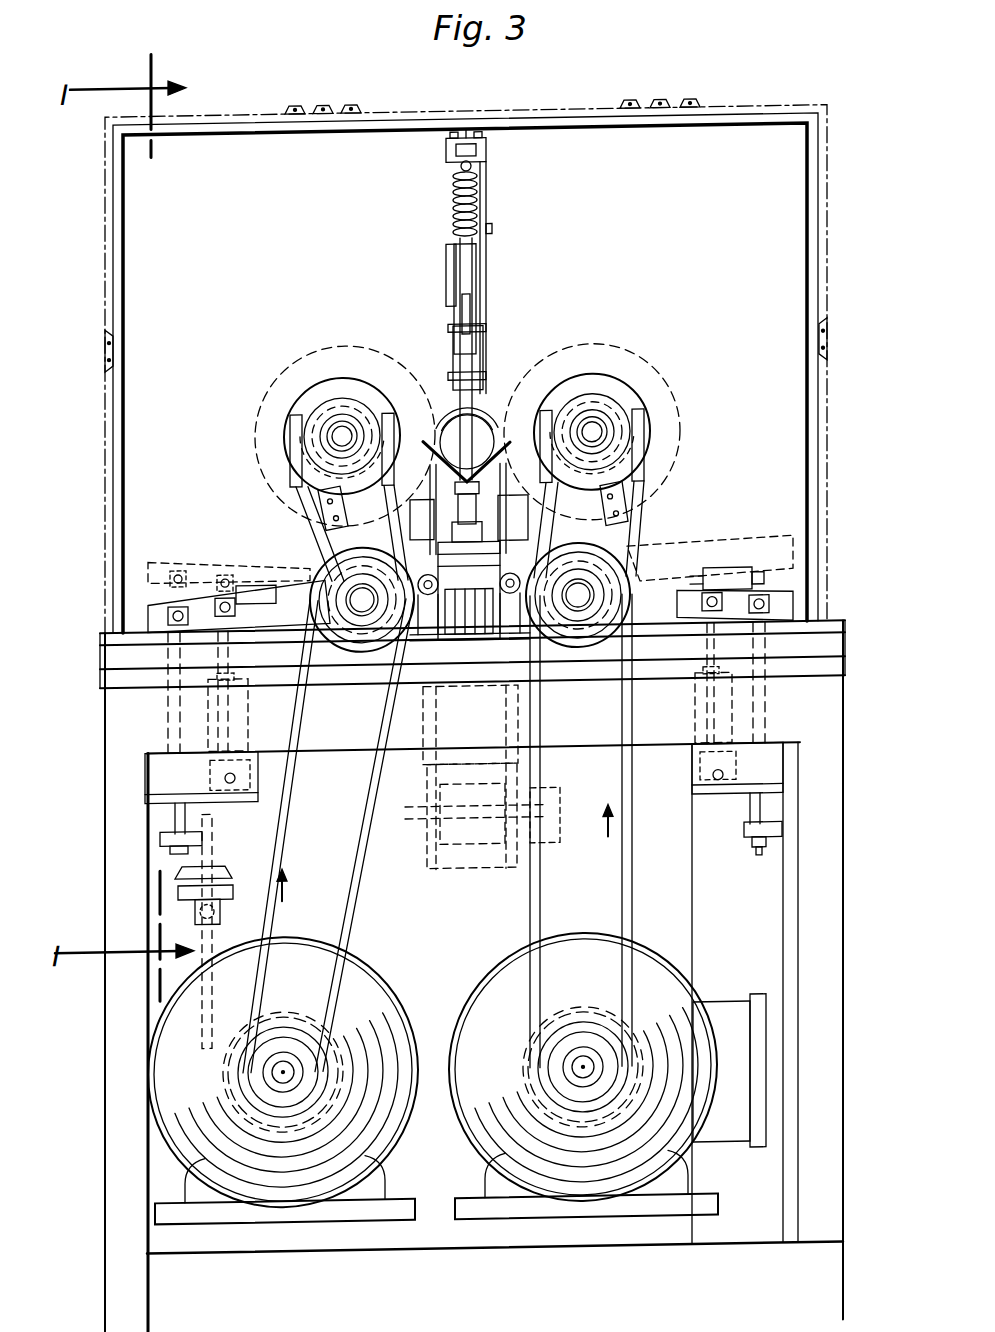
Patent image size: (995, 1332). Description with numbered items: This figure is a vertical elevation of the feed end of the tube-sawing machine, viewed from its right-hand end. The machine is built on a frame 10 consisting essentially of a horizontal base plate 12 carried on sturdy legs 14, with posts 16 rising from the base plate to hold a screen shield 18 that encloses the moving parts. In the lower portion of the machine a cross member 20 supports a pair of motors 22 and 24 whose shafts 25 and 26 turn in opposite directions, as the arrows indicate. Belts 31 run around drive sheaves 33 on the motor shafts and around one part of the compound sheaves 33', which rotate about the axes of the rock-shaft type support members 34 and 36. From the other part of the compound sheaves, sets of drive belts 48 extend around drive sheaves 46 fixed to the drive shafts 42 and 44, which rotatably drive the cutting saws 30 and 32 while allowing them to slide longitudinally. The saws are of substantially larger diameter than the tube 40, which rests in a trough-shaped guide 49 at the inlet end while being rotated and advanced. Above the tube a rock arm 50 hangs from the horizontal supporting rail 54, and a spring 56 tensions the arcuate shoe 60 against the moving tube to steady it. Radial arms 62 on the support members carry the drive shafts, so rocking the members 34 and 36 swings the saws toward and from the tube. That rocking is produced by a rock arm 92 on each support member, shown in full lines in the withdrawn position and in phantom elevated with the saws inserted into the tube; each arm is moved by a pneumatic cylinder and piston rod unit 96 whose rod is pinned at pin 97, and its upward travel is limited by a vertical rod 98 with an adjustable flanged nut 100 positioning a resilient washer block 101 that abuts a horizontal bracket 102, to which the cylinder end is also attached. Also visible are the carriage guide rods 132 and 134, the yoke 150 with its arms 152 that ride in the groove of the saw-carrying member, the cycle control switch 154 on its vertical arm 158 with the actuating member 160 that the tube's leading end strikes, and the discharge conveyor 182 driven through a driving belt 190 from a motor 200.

The frame 10 is at (96, 716).
The base plate 12 is at (815, 646).
The legs 14 is at (838, 906).
The posts 16 is at (118, 412).
The screen shield 18 is at (318, 116).
The cross member 20 is at (428, 1254).
The motor 22 is at (300, 1228).
The motor 24 is at (600, 1228).
The motor shaft 25 is at (288, 1070).
The motor shaft 26 is at (586, 1068).
The cutting saw 30 is at (378, 348).
The belts 31 is at (366, 899).
The cutting saw 32 is at (572, 340).
The drive sheaves 33 is at (433, 1058).
The compound sheaves 33' is at (495, 556).
The support member 34 is at (362, 660).
The support member 36 is at (586, 656).
The tube 40 is at (488, 420).
The drive shaft 42 is at (340, 441).
The drive shaft 44 is at (594, 441).
The drive sheaves 46 is at (290, 420).
The drive belts 48 is at (297, 512).
The trough-shaped guide 49 is at (428, 454).
The rock arm 50 is at (458, 312).
The horizontal supporting rail 54 is at (471, 138).
The spring 56 is at (452, 218).
The arcuate shoe 60 is at (446, 406).
The radial arms 62 is at (324, 510).
The rock arm 92 is at (150, 604).
The cylinder and piston rod unit 96 is at (208, 719).
The pin 97 is at (222, 600).
The vertical rod 98 is at (176, 781).
The adjustable flanged nut 100 is at (186, 862).
The resilient washer block 101 is at (162, 838).
The horizontal bracket 102 is at (246, 808).
The guide rod 132 is at (452, 550).
The guide rod 134 is at (500, 642).
The yoke 150 is at (300, 480).
The yoke arms 152 is at (396, 372).
The cycle control switch 154 is at (446, 262).
The vertical arm 158 is at (488, 252).
The actuating member 160 is at (496, 380).
The discharge conveyor 182 is at (440, 600).
The driving belt 190 is at (422, 780).
The motor 200 is at (498, 876).